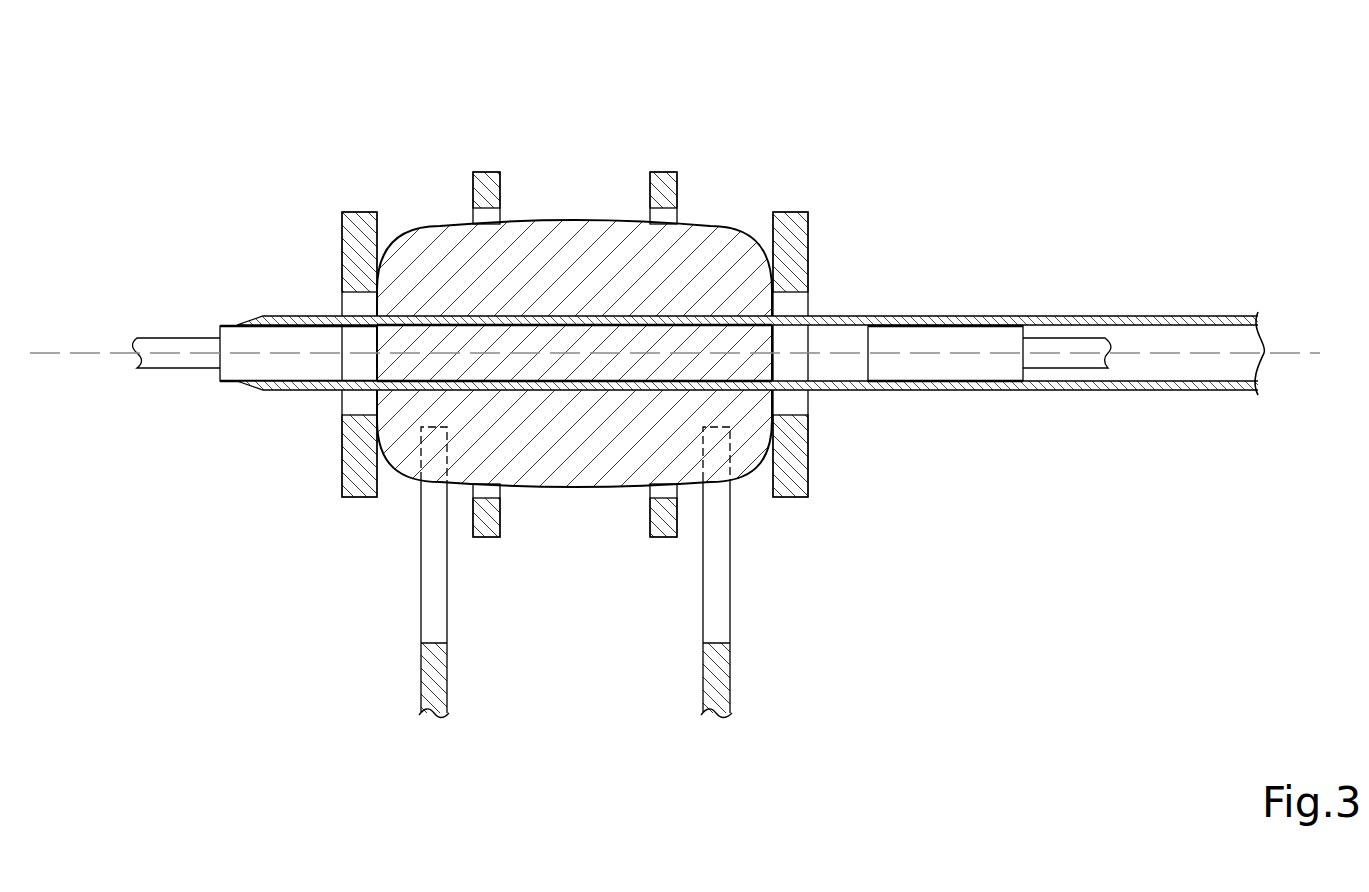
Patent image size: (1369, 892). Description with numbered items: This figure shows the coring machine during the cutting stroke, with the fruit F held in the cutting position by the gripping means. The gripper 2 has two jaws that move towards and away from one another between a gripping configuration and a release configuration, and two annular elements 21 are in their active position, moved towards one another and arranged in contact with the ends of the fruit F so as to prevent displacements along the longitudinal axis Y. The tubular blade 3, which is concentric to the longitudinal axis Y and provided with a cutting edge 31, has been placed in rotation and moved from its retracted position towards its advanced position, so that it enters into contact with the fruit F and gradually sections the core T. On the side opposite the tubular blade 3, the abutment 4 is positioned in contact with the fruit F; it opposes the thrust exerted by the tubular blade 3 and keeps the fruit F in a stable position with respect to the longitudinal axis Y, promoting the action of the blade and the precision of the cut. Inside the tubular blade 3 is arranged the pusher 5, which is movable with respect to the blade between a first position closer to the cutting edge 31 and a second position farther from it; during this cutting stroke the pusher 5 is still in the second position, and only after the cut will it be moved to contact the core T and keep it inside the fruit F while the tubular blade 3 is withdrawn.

The gripper 2 is at (643, 178).
The annular elements 21 is at (367, 218).
The tubular blade 3 is at (297, 323).
The cutting edge 31 is at (240, 323).
The abutment 4 is at (267, 340).
The pusher 5 is at (935, 340).
The fruit F is at (445, 247).
The core T is at (573, 368).
The longitudinal axis Y is at (675, 339).